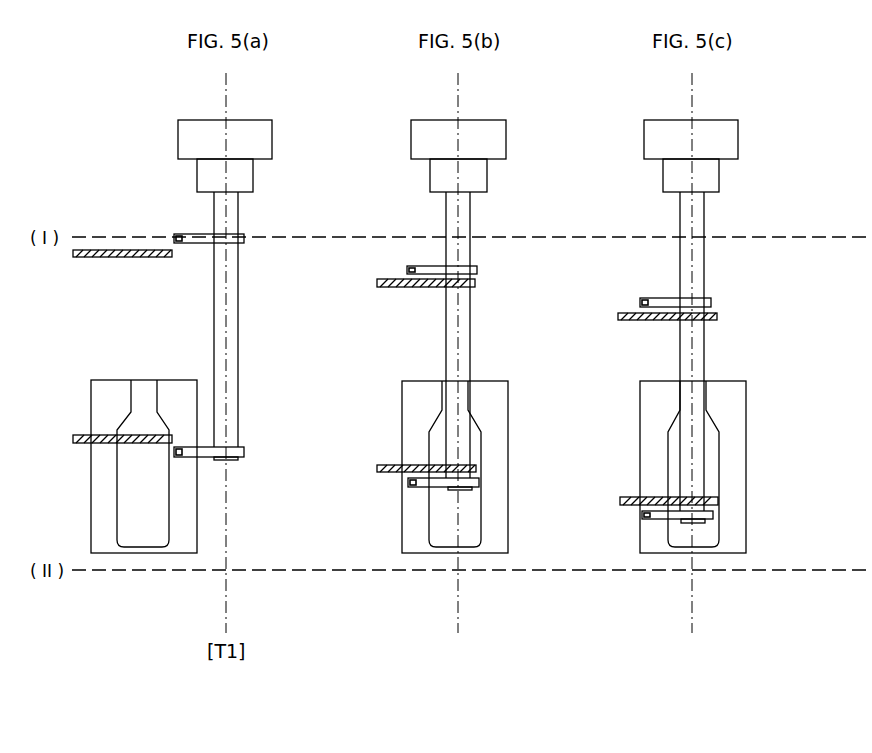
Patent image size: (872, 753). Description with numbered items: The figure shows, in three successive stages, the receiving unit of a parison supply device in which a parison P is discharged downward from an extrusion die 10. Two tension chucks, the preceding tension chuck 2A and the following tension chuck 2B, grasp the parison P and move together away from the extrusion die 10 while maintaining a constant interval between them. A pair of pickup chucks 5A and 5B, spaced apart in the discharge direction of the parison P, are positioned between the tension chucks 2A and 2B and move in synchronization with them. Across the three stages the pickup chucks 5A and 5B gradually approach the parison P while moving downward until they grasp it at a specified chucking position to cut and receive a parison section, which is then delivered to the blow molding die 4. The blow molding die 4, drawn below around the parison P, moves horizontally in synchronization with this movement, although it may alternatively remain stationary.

In FIG. 5A, the extrusion die 10 is at (272, 138).
In FIG. 5B, the extrusion die 10 is at (506, 138).
In FIG. 5C, the extrusion die 10 is at (738, 138).
In FIG. 5A, the parison P is at (238, 212).
In FIG. 5B, the parison P is at (470, 212).
In FIG. 5C, the parison P is at (704, 212).
In FIG. 5A, the preceding tension chuck 2A is at (244, 452).
In FIG. 5B, the preceding tension chuck 2A is at (479, 482).
In FIG. 5C, the preceding tension chuck 2A is at (713, 515).
In FIG. 5A, the following tension chuck 2B is at (244, 241).
In FIG. 5B, the following tension chuck 2B is at (477, 271).
In FIG. 5C, the following tension chuck 2B is at (711, 303).
In FIG. 5A, the pickup chuck 5A is at (80, 435).
In FIG. 5B, the pickup chuck 5A is at (377, 463).
In FIG. 5C, the pickup chuck 5A is at (718, 502).
In FIG. 5A, the pickup chuck 5B is at (130, 258).
In FIG. 5B, the pickup chuck 5B is at (380, 288).
In FIG. 5C, the pickup chuck 5B is at (717, 316).
In FIG. 5A, the blow molding die 4 is at (91, 493).
In FIG. 5B, the blow molding die 4 is at (402, 515).
In FIG. 5C, the blow molding die 4 is at (640, 530).